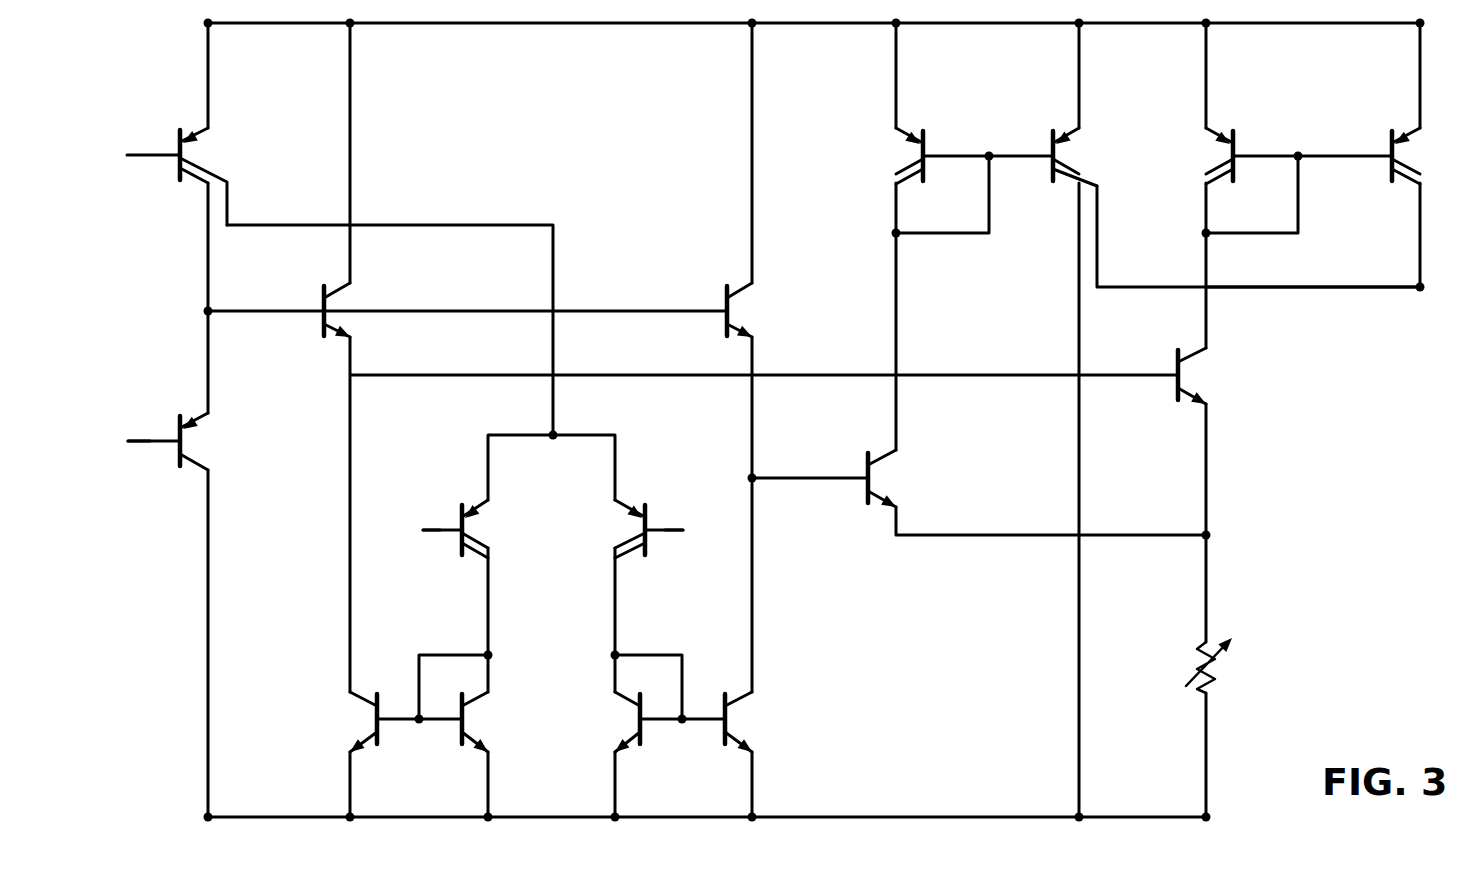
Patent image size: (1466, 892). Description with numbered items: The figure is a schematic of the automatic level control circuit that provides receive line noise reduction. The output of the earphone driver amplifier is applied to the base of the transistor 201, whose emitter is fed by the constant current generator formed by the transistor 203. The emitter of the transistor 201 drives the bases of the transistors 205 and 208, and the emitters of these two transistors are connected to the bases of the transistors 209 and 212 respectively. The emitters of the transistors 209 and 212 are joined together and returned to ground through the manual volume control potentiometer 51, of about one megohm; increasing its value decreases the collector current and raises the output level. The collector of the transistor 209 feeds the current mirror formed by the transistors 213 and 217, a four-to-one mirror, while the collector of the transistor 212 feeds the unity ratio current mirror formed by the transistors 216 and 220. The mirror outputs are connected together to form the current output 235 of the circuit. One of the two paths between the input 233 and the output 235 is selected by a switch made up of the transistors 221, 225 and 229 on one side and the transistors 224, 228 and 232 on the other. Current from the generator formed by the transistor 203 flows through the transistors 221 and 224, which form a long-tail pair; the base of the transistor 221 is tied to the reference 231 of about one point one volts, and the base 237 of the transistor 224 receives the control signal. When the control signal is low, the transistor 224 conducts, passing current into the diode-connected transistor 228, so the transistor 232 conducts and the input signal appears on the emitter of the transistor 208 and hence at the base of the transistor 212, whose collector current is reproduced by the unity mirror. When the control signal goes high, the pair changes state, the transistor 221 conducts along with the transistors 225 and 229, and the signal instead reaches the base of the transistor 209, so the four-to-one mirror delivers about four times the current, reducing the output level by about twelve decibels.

The transistor 203 is at (178, 140).
The transistor 205 is at (323, 295).
The transistor 208 is at (725, 332).
The transistor 201 is at (173, 455).
The input 233 is at (133, 441).
The transistor 221 is at (462, 540).
The 1.1 V reference 231 is at (425, 528).
The transistor 224 is at (645, 542).
The base 237 is at (670, 527).
The transistor 229 is at (377, 700).
The transistor 225 is at (462, 738).
The diode-connected transistor 228 is at (642, 737).
The transistor 232 is at (723, 702).
The transistor 212 is at (865, 465).
The transistor 216 is at (927, 133).
The transistor 220 is at (1052, 136).
The transistor 213 is at (1235, 135).
The transistor 217 is at (1390, 138).
The transistor 209 is at (1176, 358).
The output 235 is at (1310, 287).
The manual volume control potentiometer 51 is at (1220, 673).